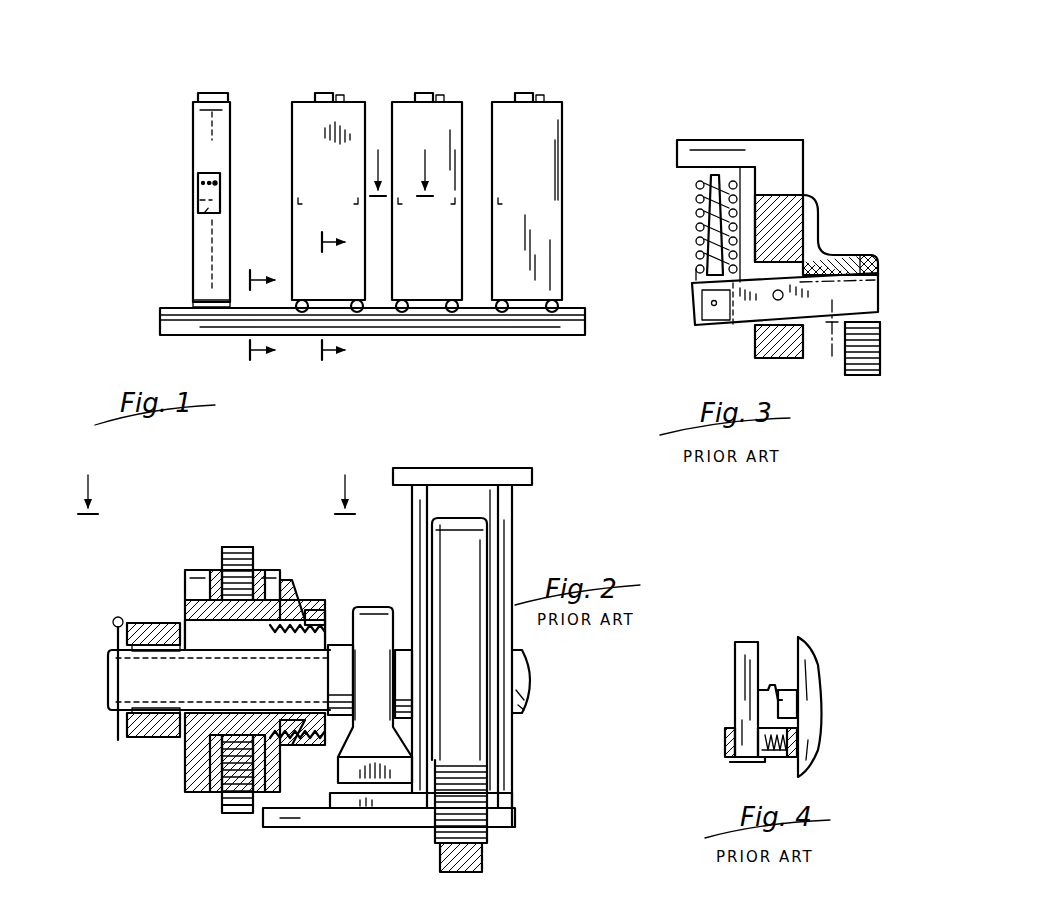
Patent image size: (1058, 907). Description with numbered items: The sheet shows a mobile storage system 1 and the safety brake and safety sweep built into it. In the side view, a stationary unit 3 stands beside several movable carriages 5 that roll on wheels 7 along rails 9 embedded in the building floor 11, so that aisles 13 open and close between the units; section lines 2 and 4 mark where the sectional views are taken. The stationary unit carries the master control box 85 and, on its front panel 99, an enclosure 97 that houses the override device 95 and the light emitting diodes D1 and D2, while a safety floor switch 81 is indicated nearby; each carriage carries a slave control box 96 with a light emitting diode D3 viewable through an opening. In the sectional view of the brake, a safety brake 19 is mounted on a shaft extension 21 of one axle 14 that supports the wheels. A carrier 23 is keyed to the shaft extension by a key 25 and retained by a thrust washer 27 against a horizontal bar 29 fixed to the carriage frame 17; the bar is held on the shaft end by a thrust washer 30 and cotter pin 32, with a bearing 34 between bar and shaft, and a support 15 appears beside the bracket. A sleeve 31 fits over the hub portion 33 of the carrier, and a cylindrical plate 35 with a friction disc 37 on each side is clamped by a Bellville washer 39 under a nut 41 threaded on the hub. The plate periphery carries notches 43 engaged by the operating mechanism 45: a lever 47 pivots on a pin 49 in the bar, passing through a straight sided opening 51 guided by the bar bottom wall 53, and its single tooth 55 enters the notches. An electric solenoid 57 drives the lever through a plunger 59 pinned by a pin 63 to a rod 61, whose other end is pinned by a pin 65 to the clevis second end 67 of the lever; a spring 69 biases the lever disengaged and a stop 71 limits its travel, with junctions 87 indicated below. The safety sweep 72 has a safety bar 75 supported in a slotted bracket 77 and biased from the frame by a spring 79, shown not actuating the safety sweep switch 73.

In FIG. 1, the mobile storage system 1 is at (565, 160).
In FIG. 1, the section line 2— 2 is at (333, 299).
In FIG. 1, the stationary unit 3 is at (190, 136).
In FIG. 2, the stationary unit 3 is at (213, 494).
In FIG. 1, the section line 4— 4 is at (386, 150).
In FIG. 1, the movable carriage 5 is at (358, 100).
In FIG. 2, the movable carriage 5 is at (515, 540).
In FIG. 4, the movable carriage 5 is at (822, 735).
In FIG. 1, the wheels 7 is at (304, 302).
In FIG. 2, the wheels 7 is at (450, 525).
In FIG. 1, the rails 9 is at (582, 309).
In FIG. 2, the rails 9 is at (440, 856).
In FIG. 1, the building floor 11 is at (560, 322).
In FIG. 1, the aisles 13 is at (257, 108).
In FIG. 2, the axle 14 is at (528, 680).
In FIG. 2, the bracket 15 is at (380, 606).
In FIG. 2, the carriage frame 17 is at (268, 830).
In FIG. 4, the carriage frame 17 is at (823, 670).
In FIG. 3, the safety brake 19 is at (838, 188).
In FIG. 2, the safety brake 19 is at (112, 618).
In FIG. 2, the shaft extension 21 is at (128, 672).
In FIG. 2, the carrier 23 is at (195, 583).
In FIG. 2, the key 25 is at (352, 664).
In FIG. 2, the thrust washer 27 is at (190, 748).
In FIG. 3, the horizontal bar 29 is at (782, 150).
In FIG. 2, the horizontal bar 29 is at (152, 740).
In FIG. 2, the thrust washer 30 is at (140, 738).
In FIG. 2, the sleeve 31 is at (262, 648).
In FIG. 2, the cotter pin 32 is at (114, 726).
In FIG. 2, the hub portion 33 is at (205, 647).
In FIG. 2, the bearing 34 is at (152, 623).
In FIG. 3, the cylindrical plate 35 is at (882, 340).
In FIG. 2, the cylindrical plate 35 is at (256, 560).
In FIG. 2, the friction disc 37 is at (215, 575).
In FIG. 2, the Bellville washer 39 is at (300, 605).
In FIG. 2, the nut 41 is at (315, 615).
In FIG. 3, the notches 43 is at (882, 325).
In FIG. 2, the notches 43 is at (238, 546).
In FIG. 3, the operating mechanism 45 is at (822, 162).
In FIG. 3, the lever 47 is at (880, 274).
In FIG. 3, the pin 49 is at (780, 298).
In FIG. 3, the straight sided opening 51 is at (762, 318).
In FIG. 3, the bar bottom wall 53 is at (812, 245).
In FIG. 3, the single tooth 55 is at (855, 285).
In FIG. 3, the electric solenoid 57 is at (712, 140).
In FIG. 3, the plunger 59 is at (710, 162).
In FIG. 3, the rod 61 is at (700, 215).
In FIG. 3, the pin 63 is at (705, 188).
In FIG. 3, the pin 65 is at (686, 288).
In FIG. 3, the second end of lever 67 is at (700, 325).
In FIG. 3, the spring 69 is at (696, 244).
In FIG. 3, the stop 71 is at (858, 262).
In FIG. 1, the safety sweep 72 is at (225, 213).
In FIG. 4, the safety sweep 72 is at (722, 744).
In FIG. 4, the safety sweep switch 73 is at (790, 702).
In FIG. 4, the safety bar 75 is at (746, 648).
In FIG. 4, the slotted bracket 77 is at (731, 730).
In FIG. 4, the spring 79 is at (770, 757).
In FIG. 1, the safety floor switch 81 is at (200, 228).
In FIG. 1, the master control box 85 is at (208, 92).
In FIG. 3, the junctions 87 is at (820, 355).
In FIG. 1, the override device 95 is at (214, 184).
In FIG. 1, the slave control box 96 is at (322, 92).
In FIG. 1, the enclosure 97 is at (205, 178).
In FIG. 1, the front panel 99 is at (200, 110).
In FIG. 1, the light emitting diode D1 is at (216, 184).
In FIG. 1, the light emitting diode D2 is at (211, 183).
In FIG. 1, the light emitting diode D3 is at (340, 93).